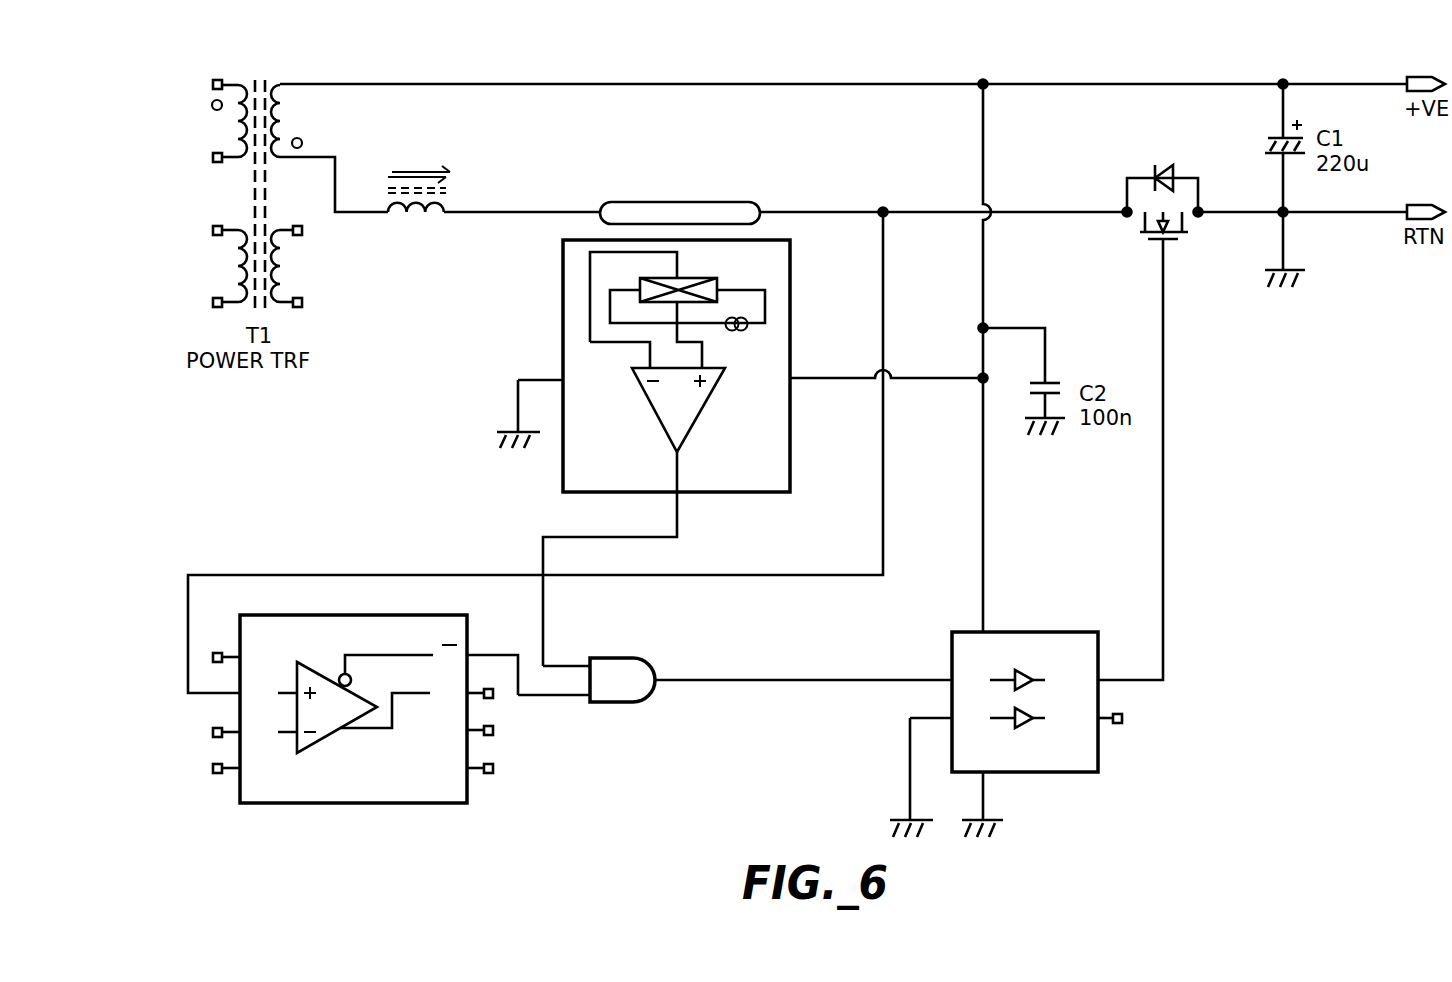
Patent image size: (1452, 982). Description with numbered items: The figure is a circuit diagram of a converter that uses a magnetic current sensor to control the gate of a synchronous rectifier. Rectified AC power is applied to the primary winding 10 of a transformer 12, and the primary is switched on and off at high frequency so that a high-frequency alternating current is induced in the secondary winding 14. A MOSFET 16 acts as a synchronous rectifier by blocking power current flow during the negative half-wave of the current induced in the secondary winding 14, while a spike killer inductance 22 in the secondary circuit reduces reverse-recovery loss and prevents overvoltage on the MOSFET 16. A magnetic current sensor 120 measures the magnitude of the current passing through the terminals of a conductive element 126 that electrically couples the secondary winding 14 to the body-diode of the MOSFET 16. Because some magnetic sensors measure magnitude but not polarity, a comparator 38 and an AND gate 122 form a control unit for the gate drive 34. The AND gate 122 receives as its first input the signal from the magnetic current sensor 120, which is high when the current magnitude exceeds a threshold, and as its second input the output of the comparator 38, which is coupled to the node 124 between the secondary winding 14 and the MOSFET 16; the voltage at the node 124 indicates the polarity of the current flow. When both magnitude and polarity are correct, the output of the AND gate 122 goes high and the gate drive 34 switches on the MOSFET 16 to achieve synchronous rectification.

The primary winding 10 is at (236, 118).
The transformer 12 is at (261, 77).
The secondary winding 14 is at (273, 131).
The MOSFET 16 is at (1175, 185).
The spike killer inductance 22 is at (446, 193).
The gate drive 34 is at (1078, 744).
The comparator 38 is at (373, 792).
The magnetic current sensor 120 is at (735, 482).
The AND gate 122 is at (640, 668).
The node 124 is at (880, 207).
The conductive element 126 is at (660, 201).